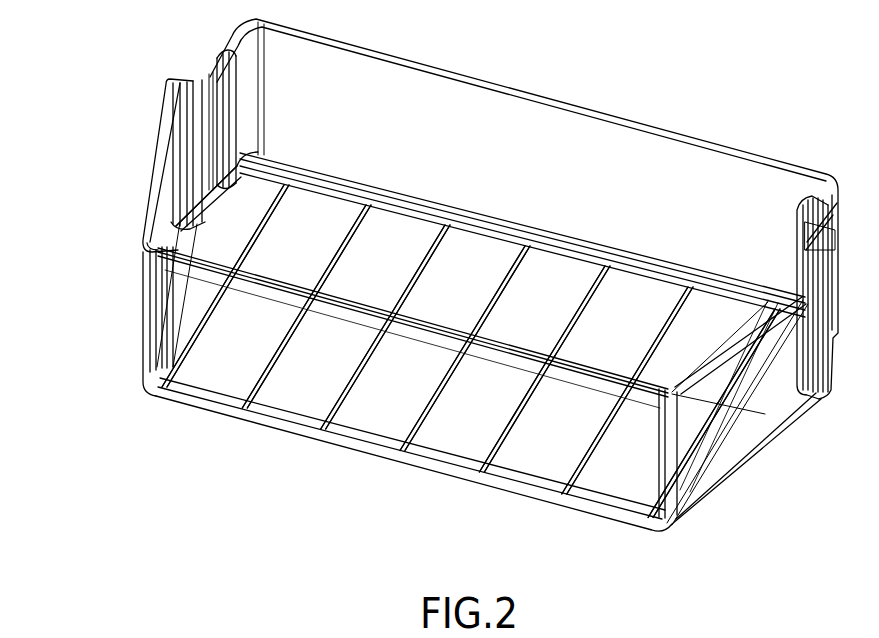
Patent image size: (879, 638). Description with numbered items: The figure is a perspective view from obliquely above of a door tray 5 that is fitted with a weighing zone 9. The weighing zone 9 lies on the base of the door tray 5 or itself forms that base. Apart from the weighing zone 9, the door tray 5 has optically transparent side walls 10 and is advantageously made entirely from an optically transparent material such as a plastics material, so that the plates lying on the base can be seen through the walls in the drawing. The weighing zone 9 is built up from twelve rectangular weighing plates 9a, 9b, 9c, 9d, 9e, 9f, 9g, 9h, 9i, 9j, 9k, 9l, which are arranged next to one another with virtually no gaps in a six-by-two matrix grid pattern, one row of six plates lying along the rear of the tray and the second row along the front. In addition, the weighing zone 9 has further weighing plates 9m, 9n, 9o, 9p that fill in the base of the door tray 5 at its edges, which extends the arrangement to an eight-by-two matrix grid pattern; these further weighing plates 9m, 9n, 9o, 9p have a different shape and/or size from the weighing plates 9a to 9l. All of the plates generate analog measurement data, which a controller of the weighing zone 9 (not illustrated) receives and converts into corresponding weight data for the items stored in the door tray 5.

The door tray 5 is at (113, 90).
The weighing zone 9 is at (513, 197).
The weighing plate 9a is at (317, 210).
The weighing plate 9b is at (387, 230).
The weighing plate 9c is at (458, 247).
The weighing plate 9d is at (538, 273).
The weighing plate 9e is at (623, 297).
The weighing plate 9f is at (698, 320).
The weighing plate 9g is at (220, 367).
The weighing plate 9h is at (302, 388).
The weighing plate 9i is at (373, 412).
The weighing plate 9j is at (443, 437).
The weighing plate 9k is at (535, 457).
The weighing plate 9l is at (618, 480).
The further weighing plate 9m is at (253, 193).
The further weighing plate 9n is at (173, 340).
The further weighing plate 9o is at (763, 395).
The further weighing plate 9p is at (718, 440).
The side wall 10 is at (137, 267).